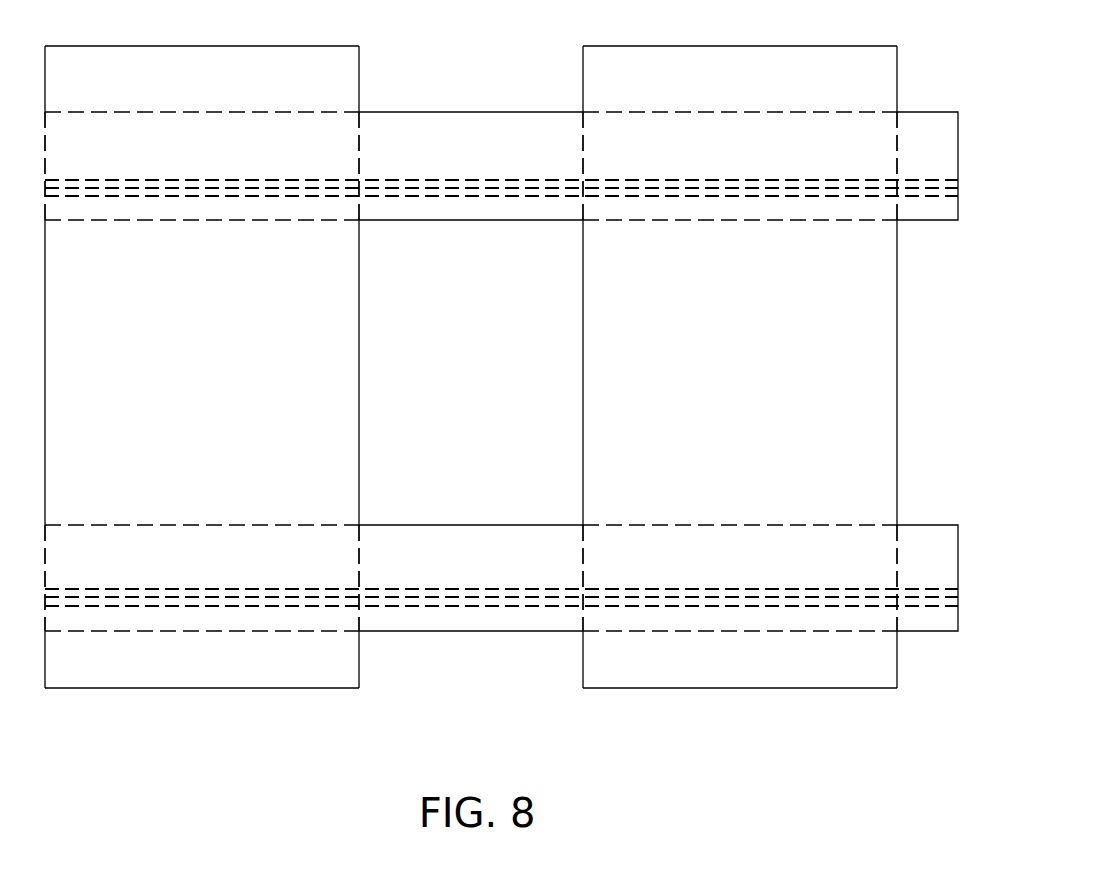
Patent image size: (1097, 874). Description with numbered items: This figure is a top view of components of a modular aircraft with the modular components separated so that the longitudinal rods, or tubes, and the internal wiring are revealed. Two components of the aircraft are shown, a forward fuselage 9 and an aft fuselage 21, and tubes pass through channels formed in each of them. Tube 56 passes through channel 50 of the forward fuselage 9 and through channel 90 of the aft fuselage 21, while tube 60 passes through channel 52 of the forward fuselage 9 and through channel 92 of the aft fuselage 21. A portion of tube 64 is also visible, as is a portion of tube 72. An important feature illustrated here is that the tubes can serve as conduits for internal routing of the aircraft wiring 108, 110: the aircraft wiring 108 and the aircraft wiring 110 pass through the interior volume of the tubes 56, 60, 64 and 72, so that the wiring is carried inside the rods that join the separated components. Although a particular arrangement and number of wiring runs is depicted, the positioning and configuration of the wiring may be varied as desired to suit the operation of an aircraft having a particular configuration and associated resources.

The forward fuselage 9 is at (330, 353).
The aft fuselage 21 is at (866, 353).
The channel 50 is at (164, 547).
The channel 52 is at (185, 137).
The tube 56 is at (455, 548).
The tube 60 is at (423, 137).
The tube 64 is at (918, 137).
The tube 72 is at (920, 548).
The channel 90 is at (703, 548).
The channel 92 is at (703, 137).
The aircraft wiring 108 is at (620, 180).
The aircraft wiring 110 is at (622, 590).